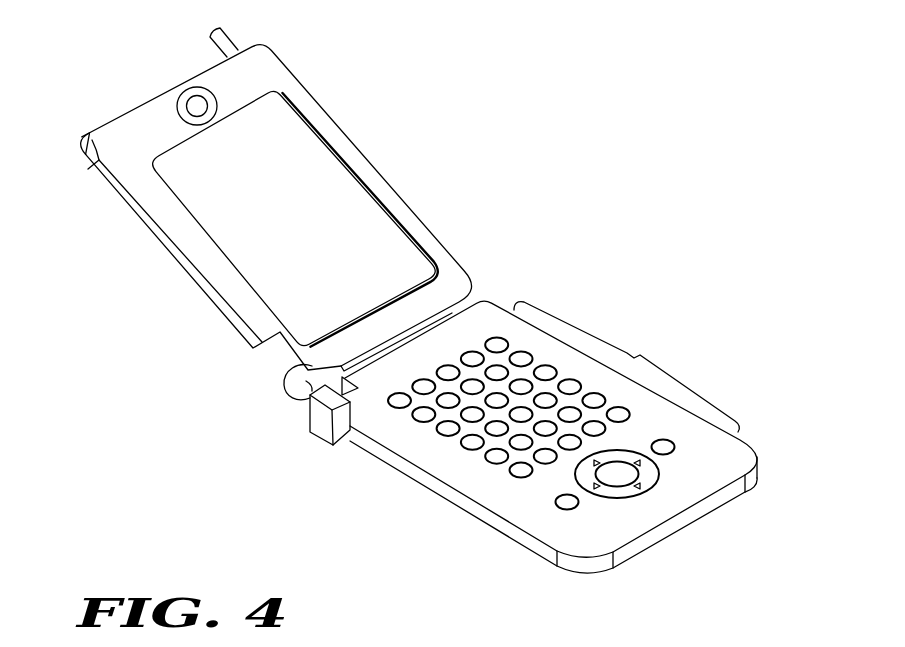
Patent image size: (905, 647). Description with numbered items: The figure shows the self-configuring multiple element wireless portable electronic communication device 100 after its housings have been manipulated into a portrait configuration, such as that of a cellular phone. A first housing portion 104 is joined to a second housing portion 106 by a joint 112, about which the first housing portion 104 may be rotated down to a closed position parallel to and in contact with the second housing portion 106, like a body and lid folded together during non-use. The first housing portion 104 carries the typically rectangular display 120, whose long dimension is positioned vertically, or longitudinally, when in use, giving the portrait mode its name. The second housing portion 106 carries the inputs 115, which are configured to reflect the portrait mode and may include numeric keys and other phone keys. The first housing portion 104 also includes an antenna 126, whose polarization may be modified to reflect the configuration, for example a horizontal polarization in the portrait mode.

The self-configuring multiple element wireless portable electronic communication dev 100 is at (126, 360).
The first housing portion 104 is at (152, 228).
The second housing portion 106 is at (442, 485).
The joint 112 is at (276, 414).
The inputs 115 is at (626, 367).
The display 120 is at (352, 193).
The antenna 126 is at (223, 42).